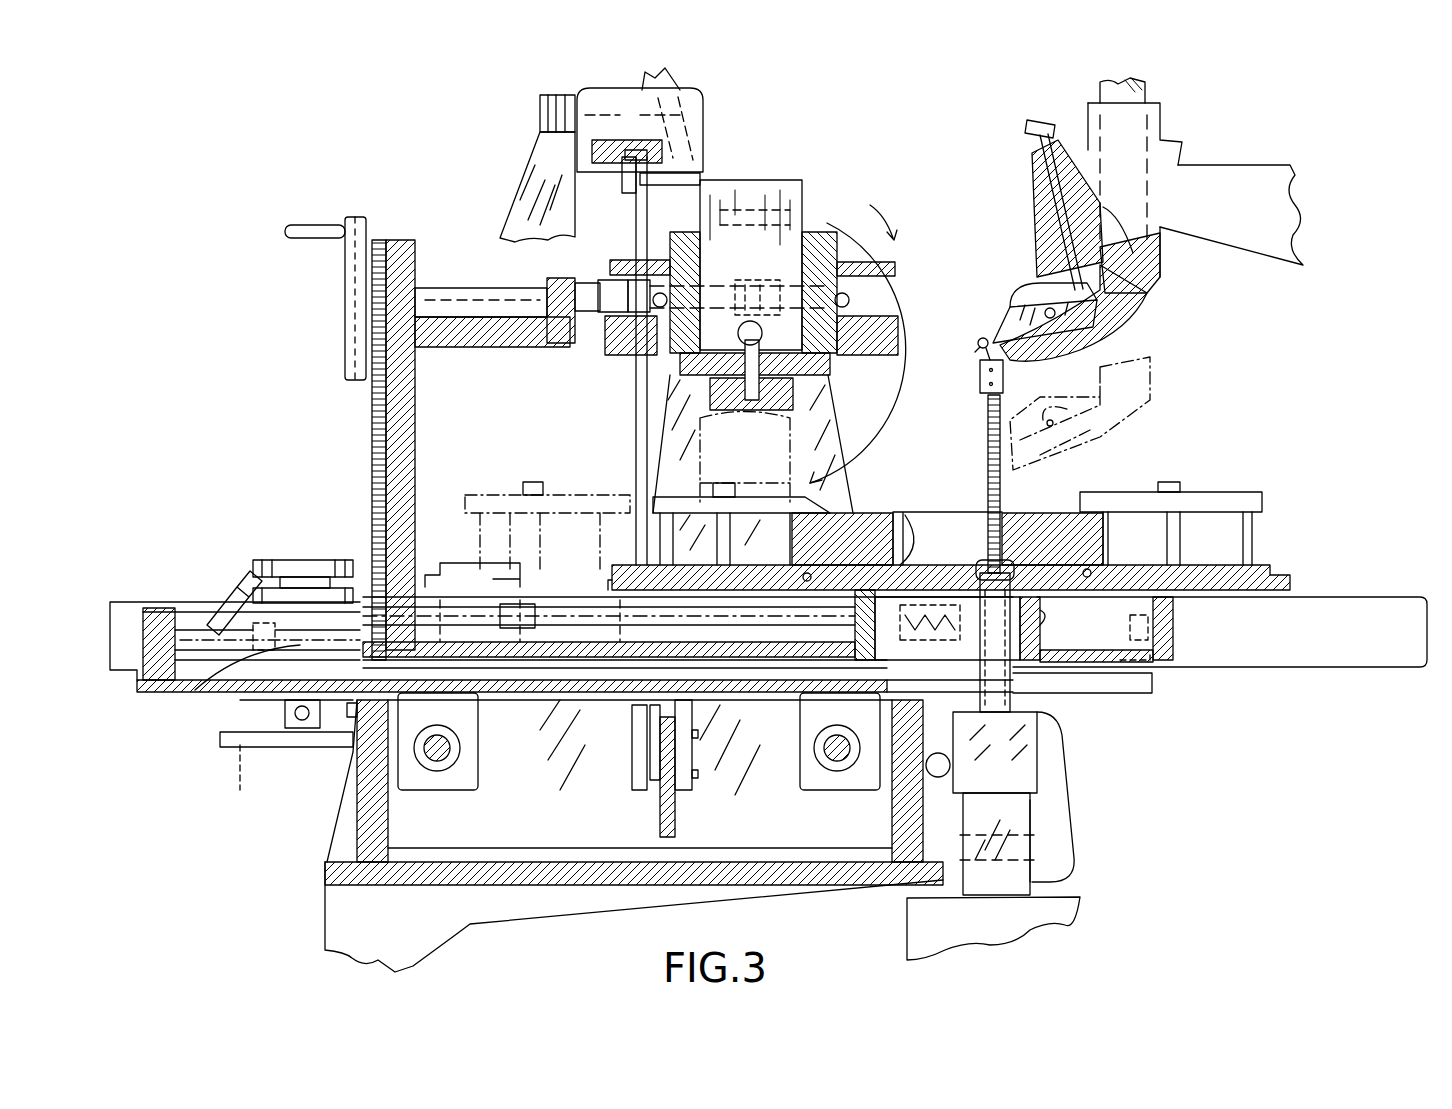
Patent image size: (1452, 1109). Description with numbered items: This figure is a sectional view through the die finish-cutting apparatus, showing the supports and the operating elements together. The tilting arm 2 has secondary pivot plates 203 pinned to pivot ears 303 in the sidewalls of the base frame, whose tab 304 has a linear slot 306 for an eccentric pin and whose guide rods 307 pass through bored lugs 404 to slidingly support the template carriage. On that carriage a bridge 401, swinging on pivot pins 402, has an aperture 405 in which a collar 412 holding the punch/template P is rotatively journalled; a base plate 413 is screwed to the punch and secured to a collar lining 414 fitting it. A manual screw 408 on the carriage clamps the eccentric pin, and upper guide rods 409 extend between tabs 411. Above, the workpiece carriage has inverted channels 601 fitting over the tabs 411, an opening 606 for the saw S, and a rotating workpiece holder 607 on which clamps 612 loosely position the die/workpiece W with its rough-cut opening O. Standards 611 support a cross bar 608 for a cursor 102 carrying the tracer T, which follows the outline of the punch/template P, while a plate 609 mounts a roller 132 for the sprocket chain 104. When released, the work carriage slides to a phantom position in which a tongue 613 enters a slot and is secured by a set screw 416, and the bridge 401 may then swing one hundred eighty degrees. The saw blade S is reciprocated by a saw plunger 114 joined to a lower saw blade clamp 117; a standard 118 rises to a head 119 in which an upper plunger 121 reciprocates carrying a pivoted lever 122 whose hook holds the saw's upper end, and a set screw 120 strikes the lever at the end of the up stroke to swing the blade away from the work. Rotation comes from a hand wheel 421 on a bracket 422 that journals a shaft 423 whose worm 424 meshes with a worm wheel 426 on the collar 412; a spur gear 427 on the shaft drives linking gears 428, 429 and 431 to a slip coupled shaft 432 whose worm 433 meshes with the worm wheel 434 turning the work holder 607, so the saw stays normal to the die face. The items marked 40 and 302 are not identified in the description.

The tilting arm 2 is at (392, 935).
The knob assembly 40 is at (330, 545).
The cursor 102 is at (703, 125).
The sprocket chain 104 is at (636, 424).
The saw plunger 114 is at (1055, 822).
The lower saw blade clamp 117 is at (1012, 705).
The standard 118 is at (1250, 180).
The head 119 is at (1162, 146).
The set screw 120 is at (1027, 132).
The upper plunger 121 is at (1150, 295).
The pivoted lever 122 is at (1015, 298).
The roller 132 is at (632, 758).
The secondary pivot plates 203 is at (930, 832).
The frame 302 is at (553, 839).
The pivot ears 303 is at (388, 832).
The tab 304 is at (222, 740).
The linear slot 306 is at (262, 748).
The guide rods 307 is at (450, 748).
The bridge 401 is at (917, 342).
The pivot pins 402 is at (802, 300).
The lugs 404 is at (460, 790).
The aperture 405 is at (830, 368).
The manual screw 408 is at (262, 563).
The upper guide rods 409 is at (1110, 693).
The tabs 411 is at (280, 630).
The collar 412 is at (858, 331).
The base plate 413 is at (700, 310).
The collar lining 414 is at (800, 230).
The set screw 416 is at (232, 592).
The hand wheel 421 is at (345, 222).
The bracket 422 is at (400, 240).
The shaft 423 is at (440, 300).
The worm 424 is at (775, 290).
The worm wheel 426 is at (850, 300).
The spur gear 427 is at (360, 217).
The linking gear 428 is at (372, 437).
The linking gear 429 is at (372, 461).
The gear 431 is at (372, 540).
The slip coupled shaft 432 is at (570, 608).
The worm 433 is at (915, 628).
The worm wheel 434 is at (1046, 614).
The inverted channels 601 is at (1330, 649).
The opening 606 is at (980, 578).
The rotating workpiece holder 607 is at (1275, 578).
The cross bar 608 is at (624, 190).
The plate 609 is at (675, 825).
The standards 611 is at (520, 195).
The clamps 612 is at (486, 497).
The tongue 613 is at (225, 672).
The punch/template P is at (742, 215).
The tracer T is at (690, 190).
The die/workpiece W is at (630, 510).
The saw blade S is at (987, 480).
The interior die opening O is at (912, 520).